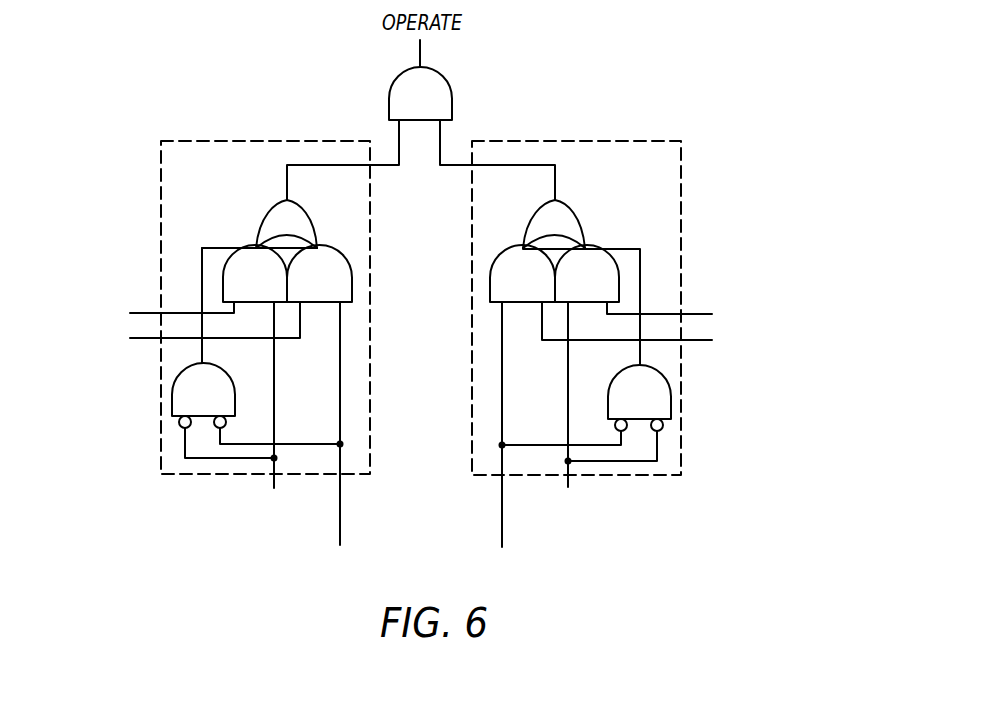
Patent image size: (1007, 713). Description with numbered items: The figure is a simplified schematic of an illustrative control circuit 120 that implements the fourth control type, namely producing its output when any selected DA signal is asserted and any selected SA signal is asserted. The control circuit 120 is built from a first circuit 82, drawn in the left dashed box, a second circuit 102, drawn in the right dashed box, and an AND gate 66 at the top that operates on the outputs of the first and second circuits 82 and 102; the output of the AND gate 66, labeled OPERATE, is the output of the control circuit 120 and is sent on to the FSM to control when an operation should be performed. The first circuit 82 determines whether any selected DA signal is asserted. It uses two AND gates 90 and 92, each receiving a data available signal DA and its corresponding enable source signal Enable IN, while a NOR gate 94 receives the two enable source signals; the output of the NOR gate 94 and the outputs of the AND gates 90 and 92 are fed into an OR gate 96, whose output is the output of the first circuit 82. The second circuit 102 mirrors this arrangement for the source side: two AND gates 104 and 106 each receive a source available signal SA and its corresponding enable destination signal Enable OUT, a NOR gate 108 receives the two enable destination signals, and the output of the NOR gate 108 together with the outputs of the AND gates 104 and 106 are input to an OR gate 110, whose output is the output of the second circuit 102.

The control circuit 120 is at (672, 48).
The AND gate 66 is at (452, 98).
The first circuit 82 is at (161, 167).
The OR gate 96 is at (262, 215).
The AND gate 92 is at (228, 257).
The AND gate 90 is at (350, 262).
The NOR gate 94 is at (172, 400).
The second circuit 102 is at (681, 172).
The OR gate 110 is at (572, 212).
The AND gate 106 is at (493, 265).
The AND gate 104 is at (612, 258).
The NOR gate 108 is at (671, 400).